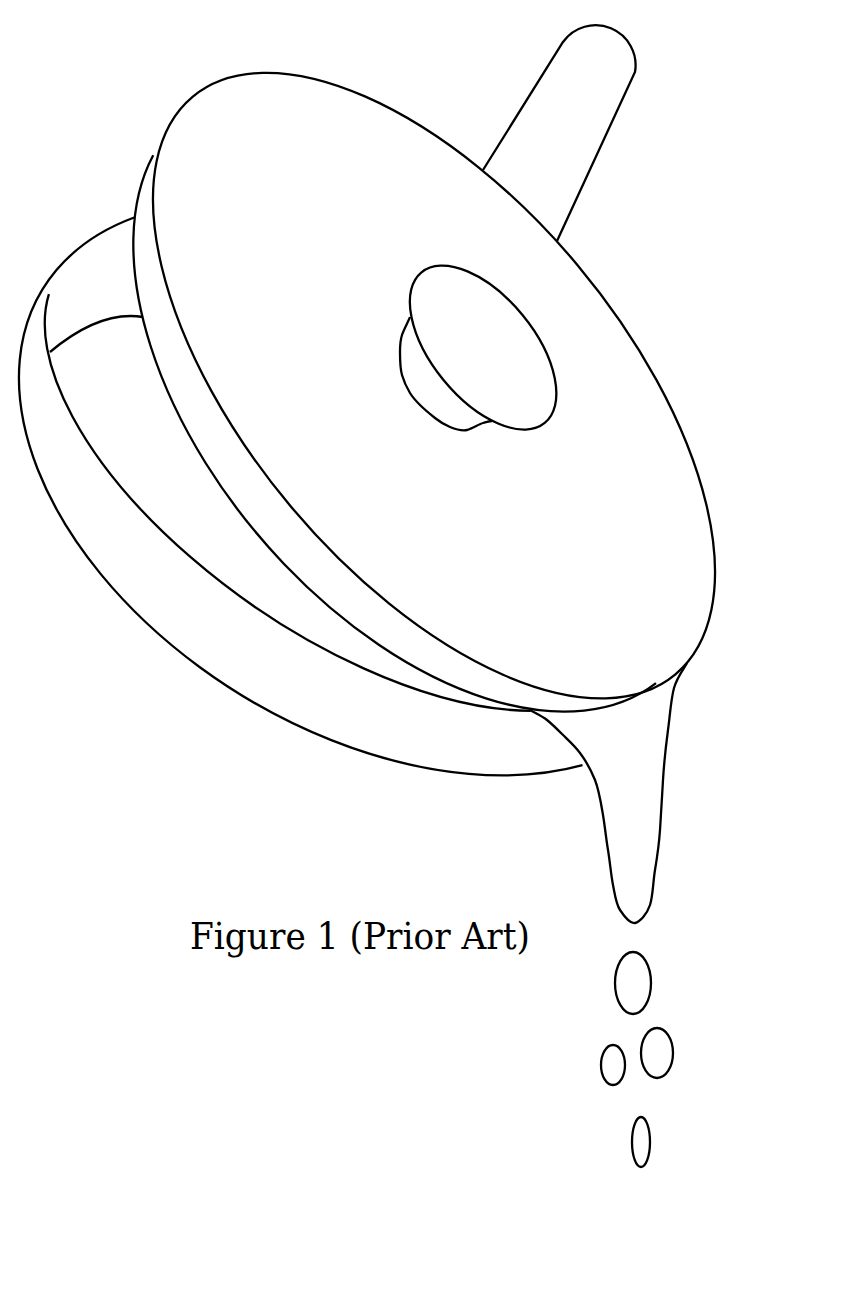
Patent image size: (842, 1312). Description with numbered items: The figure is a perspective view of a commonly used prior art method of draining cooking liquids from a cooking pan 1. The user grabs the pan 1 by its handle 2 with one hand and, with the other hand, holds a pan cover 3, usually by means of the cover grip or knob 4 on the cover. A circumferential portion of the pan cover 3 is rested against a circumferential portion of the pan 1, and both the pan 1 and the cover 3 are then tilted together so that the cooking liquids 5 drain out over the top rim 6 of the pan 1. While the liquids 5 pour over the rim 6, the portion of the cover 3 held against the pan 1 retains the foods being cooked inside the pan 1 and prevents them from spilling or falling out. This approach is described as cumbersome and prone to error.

The pan 1 is at (119, 427).
The handle 2 is at (562, 156).
The pan cover 3 is at (487, 534).
The cover grip or knob 4 is at (492, 362).
The cooking liquids/fluids 5 is at (657, 1060).
The top rim 6 is at (523, 710).